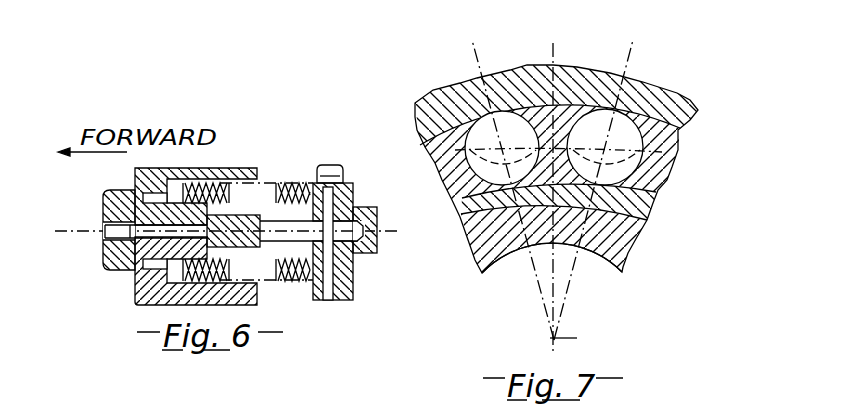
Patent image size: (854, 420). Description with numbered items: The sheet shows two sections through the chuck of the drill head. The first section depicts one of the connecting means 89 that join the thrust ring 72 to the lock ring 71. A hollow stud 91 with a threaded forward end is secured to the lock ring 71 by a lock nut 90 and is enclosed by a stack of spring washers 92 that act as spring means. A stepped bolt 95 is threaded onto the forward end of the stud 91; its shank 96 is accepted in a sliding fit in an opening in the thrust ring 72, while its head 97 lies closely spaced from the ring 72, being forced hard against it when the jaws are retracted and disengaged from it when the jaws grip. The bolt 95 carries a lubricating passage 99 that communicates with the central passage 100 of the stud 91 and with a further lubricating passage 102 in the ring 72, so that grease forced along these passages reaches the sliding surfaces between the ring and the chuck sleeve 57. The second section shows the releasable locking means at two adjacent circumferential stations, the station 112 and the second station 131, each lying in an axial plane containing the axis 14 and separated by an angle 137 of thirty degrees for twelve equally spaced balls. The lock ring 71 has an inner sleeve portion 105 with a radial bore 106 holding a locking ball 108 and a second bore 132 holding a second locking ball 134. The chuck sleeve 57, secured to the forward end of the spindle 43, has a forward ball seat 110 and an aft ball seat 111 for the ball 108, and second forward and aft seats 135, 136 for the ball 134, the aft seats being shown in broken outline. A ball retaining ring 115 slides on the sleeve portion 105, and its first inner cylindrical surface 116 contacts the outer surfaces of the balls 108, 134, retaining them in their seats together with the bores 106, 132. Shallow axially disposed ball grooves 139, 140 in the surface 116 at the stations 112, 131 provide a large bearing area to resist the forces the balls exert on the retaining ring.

In FIG. 7, the axis 14 is at (550, 338).
In FIG. 7, the spindle 43 is at (480, 268).
In FIG. 7, the chuck sleeve 57 is at (477, 228).
In FIG. 6, the lock ring 71 is at (353, 288).
In FIG. 7, the lock ring 71 is at (673, 170).
In FIG. 6, the thrust ring 72 is at (147, 280).
In FIG. 6, the connecting means 89 is at (237, 163).
In FIG. 6, the lock nut 90 is at (345, 205).
In FIG. 6, the hollow stud 91 is at (293, 183).
In FIG. 6, the spring washers 92 is at (262, 212).
In FIG. 6, the stepped bolt 95 is at (122, 185).
In FIG. 6, the shank 96 is at (158, 196).
In FIG. 6, the head 97 is at (110, 252).
In FIG. 6, the lubricating passage 99 is at (130, 230).
In FIG. 6, the central passage 100 is at (247, 237).
In FIG. 6, the lubricating passage 102 is at (330, 300).
In FIG. 7, the inner sleeve portion 105 is at (682, 148).
In FIG. 7, the bore 106 is at (690, 125).
In FIG. 7, the locking ball 108 is at (613, 68).
In FIG. 7, the forward ball seat 110 is at (655, 207).
In FIG. 7, the aft ball seat 111 is at (657, 190).
In FIG. 7, the circumferential station 112 is at (636, 66).
In FIG. 7, the ball retaining ring 115 is at (510, 82).
In FIG. 7, the first inner cylindrical surface 116 is at (526, 128).
In FIG. 7, the second station 131 is at (482, 53).
In FIG. 7, the second bore 132 is at (440, 137).
In FIG. 7, the second locking ball 134 is at (465, 103).
In FIG. 7, the second forward seat 135 is at (463, 208).
In FIG. 7, the second aft seat 136 is at (463, 148).
In FIG. 7, the angle 137 is at (603, 300).
In FIG. 7, the ball groove 139 is at (670, 98).
In FIG. 7, the ball groove 140 is at (500, 112).